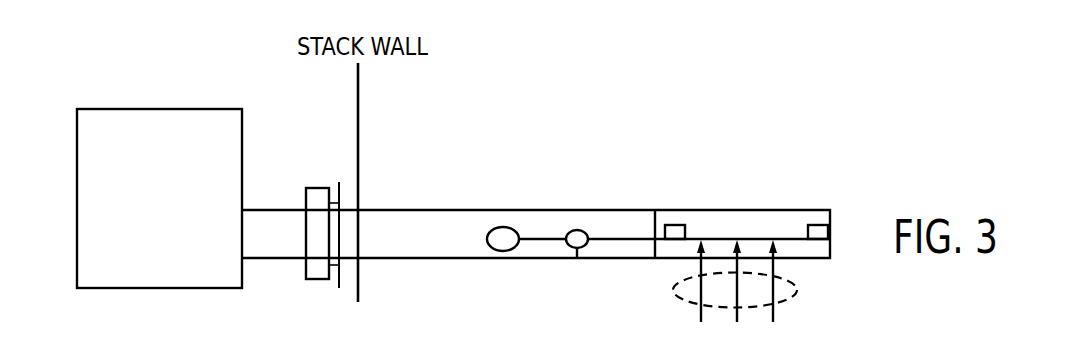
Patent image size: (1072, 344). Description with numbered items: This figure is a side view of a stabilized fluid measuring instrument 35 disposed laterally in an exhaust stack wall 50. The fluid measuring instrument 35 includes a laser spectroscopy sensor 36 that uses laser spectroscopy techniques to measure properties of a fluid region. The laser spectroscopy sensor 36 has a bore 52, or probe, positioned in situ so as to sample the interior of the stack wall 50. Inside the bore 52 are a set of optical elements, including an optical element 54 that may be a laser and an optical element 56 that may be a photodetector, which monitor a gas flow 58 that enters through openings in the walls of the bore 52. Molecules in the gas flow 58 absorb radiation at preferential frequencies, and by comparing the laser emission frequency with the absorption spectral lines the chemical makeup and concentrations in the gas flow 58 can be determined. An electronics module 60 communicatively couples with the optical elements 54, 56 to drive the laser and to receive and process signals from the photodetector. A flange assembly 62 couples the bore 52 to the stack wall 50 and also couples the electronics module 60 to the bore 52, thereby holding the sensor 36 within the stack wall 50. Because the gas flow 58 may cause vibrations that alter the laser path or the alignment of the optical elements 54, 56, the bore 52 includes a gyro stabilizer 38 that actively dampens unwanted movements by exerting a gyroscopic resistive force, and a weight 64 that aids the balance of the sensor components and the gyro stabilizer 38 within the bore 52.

The electronics module 60 is at (158, 108).
The flange assembly 62 is at (348, 178).
The stack wall 50 is at (359, 110).
The bore 52 is at (402, 209).
The fluid measuring instrument 35 is at (453, 108).
The laser spectroscopy sensor 36 is at (704, 110).
The gyro stabilizer 38 is at (503, 227).
The weight 64 is at (578, 230).
The optical element 54 is at (675, 225).
The optical element 56 is at (817, 225).
The gas flow 58 is at (794, 285).